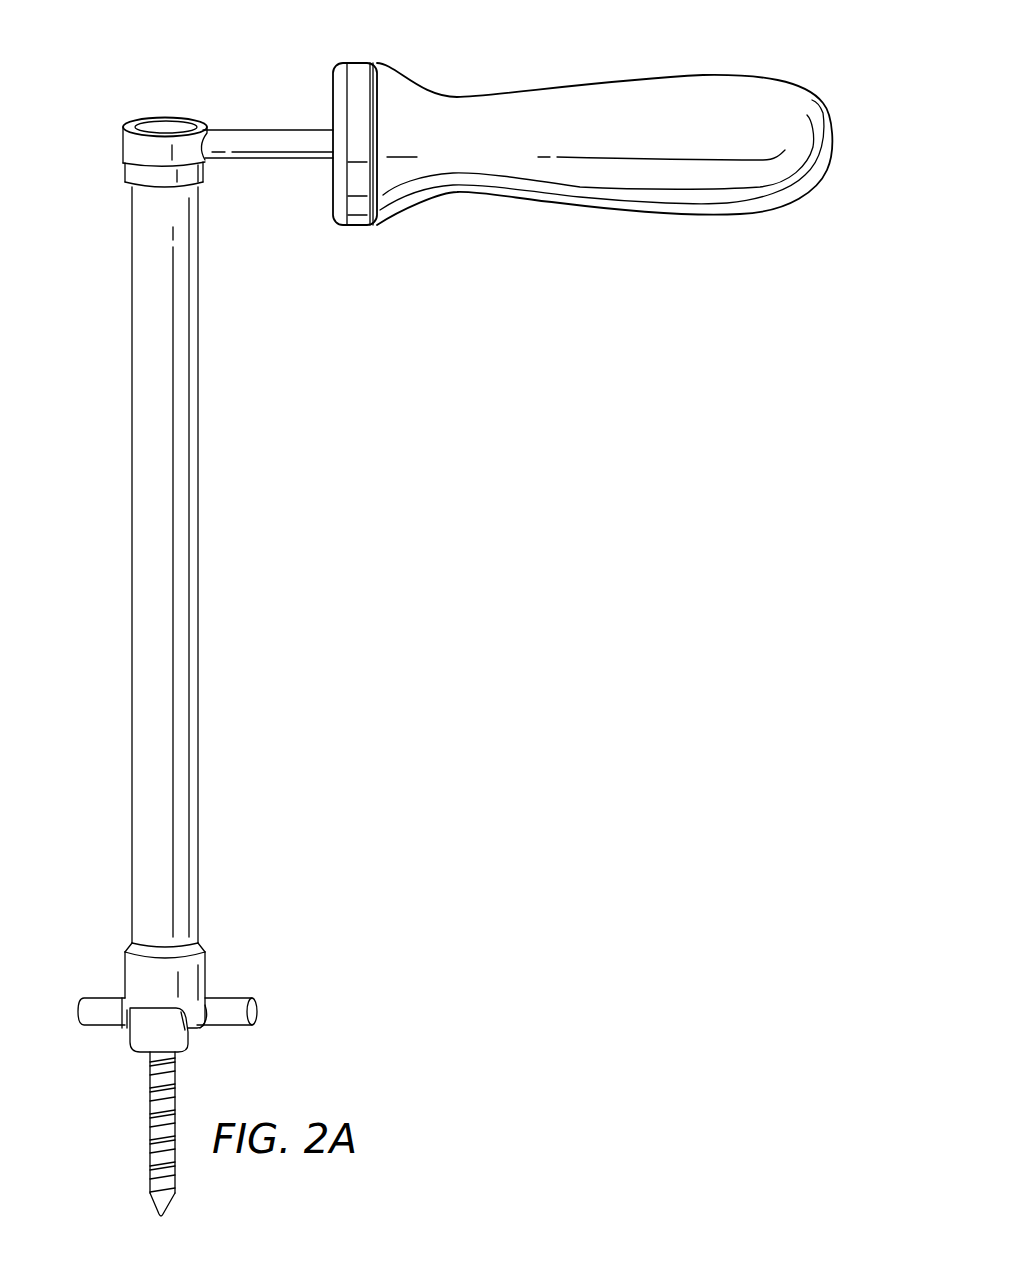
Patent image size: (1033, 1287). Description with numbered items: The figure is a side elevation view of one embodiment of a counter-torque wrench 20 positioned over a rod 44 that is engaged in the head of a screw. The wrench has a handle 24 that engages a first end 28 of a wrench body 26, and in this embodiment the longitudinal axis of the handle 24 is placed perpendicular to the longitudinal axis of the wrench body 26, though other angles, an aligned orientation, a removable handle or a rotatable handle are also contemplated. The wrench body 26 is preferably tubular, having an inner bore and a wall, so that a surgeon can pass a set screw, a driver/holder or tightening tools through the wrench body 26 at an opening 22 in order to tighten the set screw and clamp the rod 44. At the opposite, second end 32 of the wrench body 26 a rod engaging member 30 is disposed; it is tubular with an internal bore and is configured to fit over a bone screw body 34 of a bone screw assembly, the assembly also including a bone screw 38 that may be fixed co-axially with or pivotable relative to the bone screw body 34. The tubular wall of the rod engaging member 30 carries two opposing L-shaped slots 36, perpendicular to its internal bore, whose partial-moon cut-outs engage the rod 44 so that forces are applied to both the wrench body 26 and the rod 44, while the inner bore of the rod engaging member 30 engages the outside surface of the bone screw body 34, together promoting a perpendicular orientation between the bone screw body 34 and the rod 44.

The counter-torque wrench 20 is at (404, 510).
The opening 22 is at (140, 113).
The handle 24 is at (668, 87).
The wrench body 26 is at (143, 540).
The first end 28 is at (131, 194).
The rod engaging member 30 is at (207, 977).
The second end 32 is at (132, 925).
The bone screw body 34 is at (133, 1037).
The slots 36 is at (214, 1005).
The bone screw 38 is at (150, 1128).
The rod 44 is at (223, 1022).